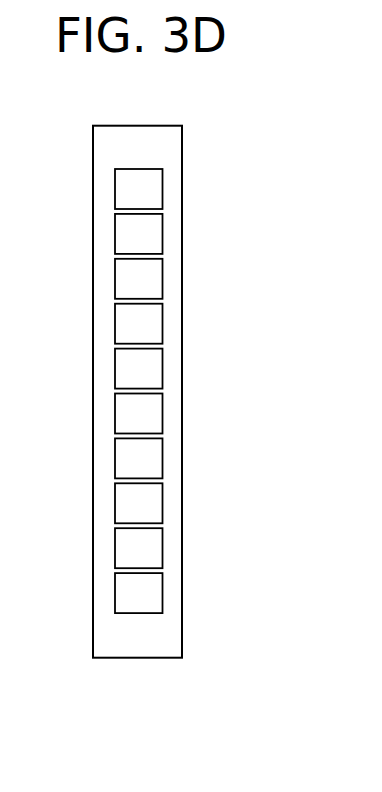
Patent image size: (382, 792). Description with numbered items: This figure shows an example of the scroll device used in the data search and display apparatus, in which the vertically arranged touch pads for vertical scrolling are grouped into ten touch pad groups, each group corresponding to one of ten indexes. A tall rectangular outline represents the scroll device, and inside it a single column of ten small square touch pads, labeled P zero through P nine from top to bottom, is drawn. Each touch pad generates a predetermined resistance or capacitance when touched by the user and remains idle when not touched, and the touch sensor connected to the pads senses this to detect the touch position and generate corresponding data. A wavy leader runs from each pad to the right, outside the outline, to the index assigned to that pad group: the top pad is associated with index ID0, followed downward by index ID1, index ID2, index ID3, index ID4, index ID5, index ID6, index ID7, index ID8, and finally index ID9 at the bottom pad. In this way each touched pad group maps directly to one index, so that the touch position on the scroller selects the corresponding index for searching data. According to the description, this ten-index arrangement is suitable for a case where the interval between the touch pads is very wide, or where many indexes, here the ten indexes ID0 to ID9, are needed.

The index ID0 is at (162, 189).
The index ID1 is at (162, 234).
The index ID2 is at (162, 279).
The index ID3 is at (162, 324).
The index ID4 is at (162, 369).
The index ID5 is at (162, 414).
The index ID6 is at (162, 458).
The index ID7 is at (162, 503).
The index ID8 is at (162, 548).
The index ID9 is at (162, 593).